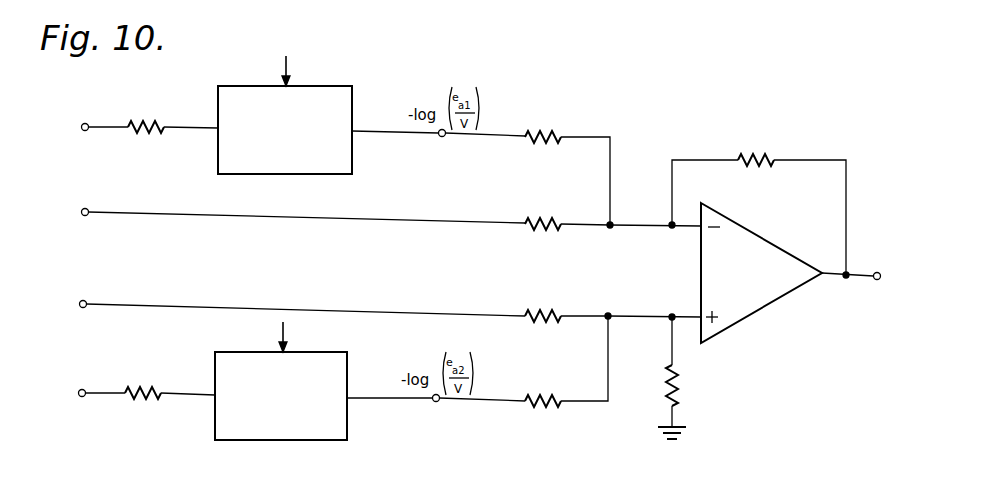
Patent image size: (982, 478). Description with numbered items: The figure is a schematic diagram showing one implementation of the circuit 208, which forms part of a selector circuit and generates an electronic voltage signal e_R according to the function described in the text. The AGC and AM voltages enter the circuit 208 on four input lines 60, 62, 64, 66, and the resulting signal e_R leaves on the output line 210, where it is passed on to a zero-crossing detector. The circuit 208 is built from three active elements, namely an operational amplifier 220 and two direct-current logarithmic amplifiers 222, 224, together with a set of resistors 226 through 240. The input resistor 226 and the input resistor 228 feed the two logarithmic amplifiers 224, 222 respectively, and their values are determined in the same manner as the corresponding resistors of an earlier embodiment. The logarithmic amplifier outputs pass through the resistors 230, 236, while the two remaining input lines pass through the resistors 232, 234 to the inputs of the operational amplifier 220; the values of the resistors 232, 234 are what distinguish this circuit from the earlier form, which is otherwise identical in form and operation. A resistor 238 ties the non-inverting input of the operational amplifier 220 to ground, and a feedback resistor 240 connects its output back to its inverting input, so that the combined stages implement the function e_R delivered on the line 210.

The line 60 is at (113, 125).
The line 62 is at (130, 211).
The line 64 is at (107, 392).
The line 66 is at (133, 304).
The circuit 208 is at (780, 390).
The line 210 is at (868, 280).
The operational amplifier 220 is at (750, 319).
The direct-current logarithmic amplifier 222 is at (232, 351).
The direct-current logarithmic amplifier 224 is at (248, 175).
The resistor 226 is at (143, 131).
The resistor 228 is at (153, 398).
The resistor 230 is at (528, 139).
The resistor 232 is at (527, 226).
The resistor 234 is at (527, 314).
The resistor 236 is at (541, 405).
The resistor 238 is at (683, 374).
The resistor 240 is at (757, 166).